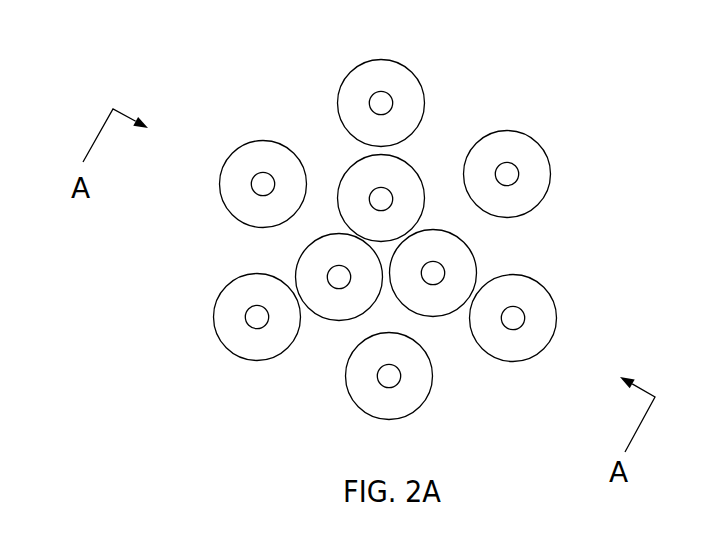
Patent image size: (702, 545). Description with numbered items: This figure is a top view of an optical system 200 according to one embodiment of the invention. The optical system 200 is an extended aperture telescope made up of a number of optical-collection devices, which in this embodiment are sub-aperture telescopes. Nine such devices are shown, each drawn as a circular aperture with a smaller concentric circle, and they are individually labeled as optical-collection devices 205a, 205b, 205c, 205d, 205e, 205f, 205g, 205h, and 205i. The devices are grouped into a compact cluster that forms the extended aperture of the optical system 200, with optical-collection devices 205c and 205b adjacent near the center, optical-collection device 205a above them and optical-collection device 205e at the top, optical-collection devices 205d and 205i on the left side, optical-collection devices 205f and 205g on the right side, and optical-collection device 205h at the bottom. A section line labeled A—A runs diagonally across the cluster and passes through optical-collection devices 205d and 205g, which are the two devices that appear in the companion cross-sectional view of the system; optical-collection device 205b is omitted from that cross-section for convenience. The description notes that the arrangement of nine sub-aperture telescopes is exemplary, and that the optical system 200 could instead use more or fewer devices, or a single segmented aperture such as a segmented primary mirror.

The optical system 200 is at (127, 289).
The optical-collection device 205a is at (422, 162).
The optical-collection device 205b is at (473, 252).
The optical-collection device 205c is at (298, 253).
The optical-collection device 205d is at (228, 148).
The optical-collection device 205e is at (425, 87).
The optical-collection device 205f is at (555, 177).
The optical-collection device 205g is at (552, 345).
The optical-collection device 205h is at (435, 392).
The optical-collection device 205i is at (217, 350).